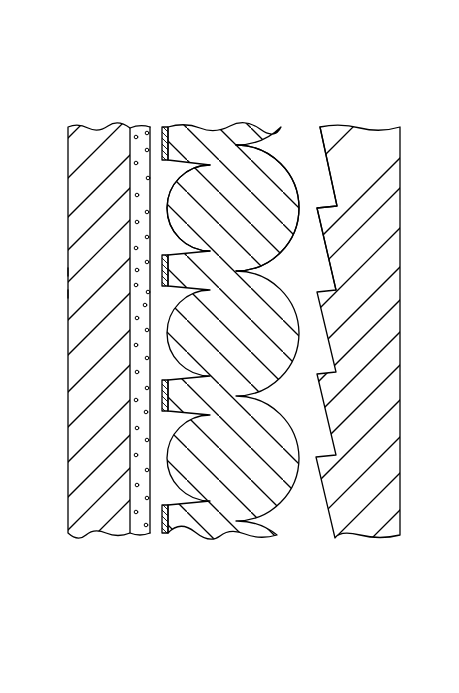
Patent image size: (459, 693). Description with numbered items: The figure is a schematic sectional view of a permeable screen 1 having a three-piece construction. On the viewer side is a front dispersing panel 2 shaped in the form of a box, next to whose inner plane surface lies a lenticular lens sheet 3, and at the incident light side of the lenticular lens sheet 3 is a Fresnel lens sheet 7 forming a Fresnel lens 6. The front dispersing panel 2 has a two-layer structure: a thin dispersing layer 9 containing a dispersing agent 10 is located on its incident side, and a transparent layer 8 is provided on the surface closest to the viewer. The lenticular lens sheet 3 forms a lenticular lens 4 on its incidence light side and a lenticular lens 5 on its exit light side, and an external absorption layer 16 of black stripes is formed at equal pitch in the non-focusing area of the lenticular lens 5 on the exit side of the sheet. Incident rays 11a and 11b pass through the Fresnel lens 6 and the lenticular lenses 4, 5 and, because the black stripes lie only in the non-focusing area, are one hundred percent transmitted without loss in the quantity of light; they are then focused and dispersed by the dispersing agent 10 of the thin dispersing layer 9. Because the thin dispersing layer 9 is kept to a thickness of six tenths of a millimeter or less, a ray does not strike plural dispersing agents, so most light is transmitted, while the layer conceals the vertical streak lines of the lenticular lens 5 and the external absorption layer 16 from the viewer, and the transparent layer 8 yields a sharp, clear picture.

The permeable screen 1 is at (403, 560).
The front dispersing panel 2 is at (67, 55).
The lenticular lens sheet 3 is at (234, 127).
The lenticular lens 4 is at (280, 238).
The lenticular lens 5 is at (183, 182).
The Fresnel lens 6 is at (327, 172).
The Fresnel lens sheet 7 is at (355, 143).
The transparent layer 8 is at (102, 133).
The thin dispersing layer 9 is at (133, 130).
The dispersing agent 10 is at (148, 130).
The incident ray 11a is at (93, 272).
The incident ray 11b is at (135, 292).
The external absorption layer 16 is at (165, 128).